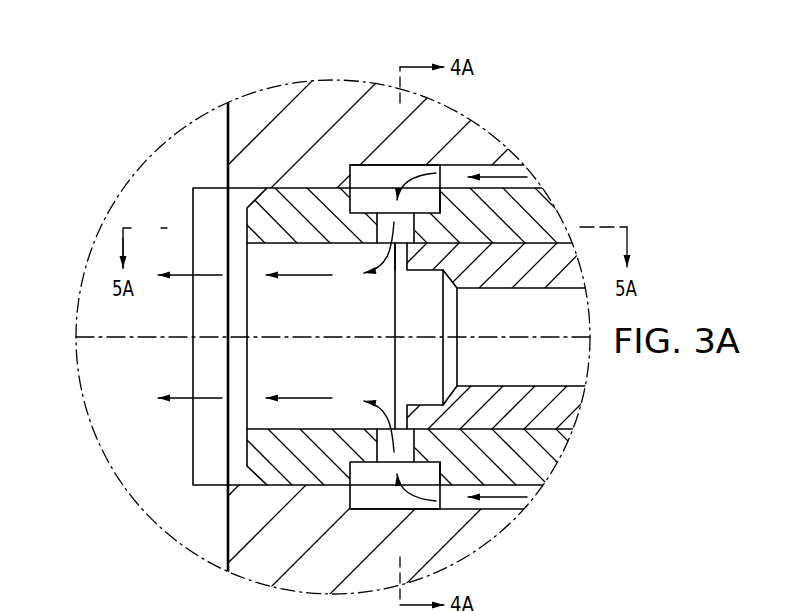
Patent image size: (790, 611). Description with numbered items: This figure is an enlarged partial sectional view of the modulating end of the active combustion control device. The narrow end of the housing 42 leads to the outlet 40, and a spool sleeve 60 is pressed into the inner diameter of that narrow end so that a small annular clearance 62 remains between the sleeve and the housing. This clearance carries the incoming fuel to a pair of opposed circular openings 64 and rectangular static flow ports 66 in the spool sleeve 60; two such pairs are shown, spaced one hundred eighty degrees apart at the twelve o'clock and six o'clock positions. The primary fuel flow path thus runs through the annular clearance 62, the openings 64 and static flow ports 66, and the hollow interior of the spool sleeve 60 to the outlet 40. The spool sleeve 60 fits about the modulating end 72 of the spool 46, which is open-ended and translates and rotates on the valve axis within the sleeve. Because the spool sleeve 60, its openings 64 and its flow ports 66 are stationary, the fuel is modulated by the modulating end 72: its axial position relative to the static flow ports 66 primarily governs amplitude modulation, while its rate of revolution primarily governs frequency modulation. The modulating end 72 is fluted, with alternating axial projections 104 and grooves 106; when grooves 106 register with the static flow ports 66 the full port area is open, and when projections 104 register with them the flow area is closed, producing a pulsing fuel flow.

The outlet 40 is at (228, 219).
The housing 42 is at (263, 98).
The spool 46 is at (538, 278).
The spool sleeve 60 is at (290, 217).
The annular clearance 62 is at (528, 183).
The circular openings 64 is at (354, 204).
The static flow ports 66 is at (412, 227).
The modulating end 72 is at (430, 276).
The axial projections 104 is at (376, 272).
The grooves 106 is at (405, 270).